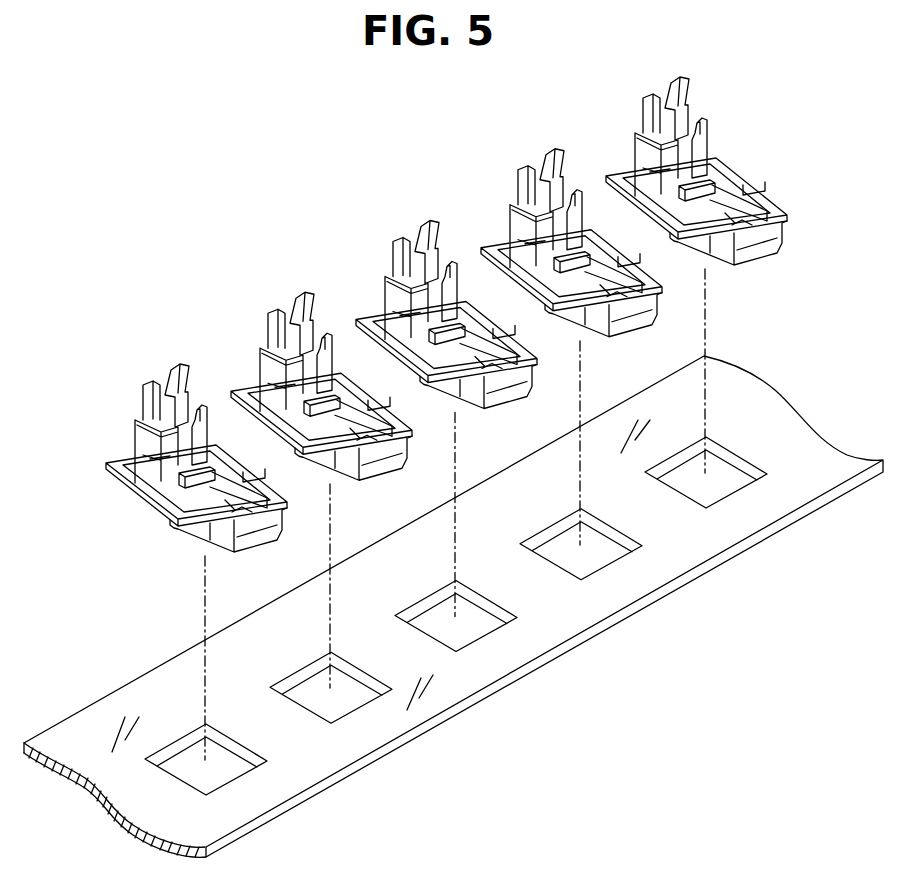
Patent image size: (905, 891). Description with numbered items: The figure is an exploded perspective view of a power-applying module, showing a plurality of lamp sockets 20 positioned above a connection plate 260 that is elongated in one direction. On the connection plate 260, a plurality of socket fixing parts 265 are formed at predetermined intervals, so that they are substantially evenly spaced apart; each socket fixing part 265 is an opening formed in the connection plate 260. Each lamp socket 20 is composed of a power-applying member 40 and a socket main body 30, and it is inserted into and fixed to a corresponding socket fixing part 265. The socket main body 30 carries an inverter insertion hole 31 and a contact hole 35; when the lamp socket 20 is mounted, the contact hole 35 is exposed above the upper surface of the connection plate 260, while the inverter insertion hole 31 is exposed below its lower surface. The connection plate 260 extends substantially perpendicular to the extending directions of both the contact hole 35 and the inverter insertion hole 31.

The lamp socket 20 is at (190, 438).
The socket main body 30 is at (138, 436).
The inverter insertion hole 31 is at (256, 530).
The contact hole 35 is at (206, 410).
The power-applying member 40 is at (177, 366).
The connection plate 260 is at (712, 563).
The socket fixing part 265 is at (600, 560).